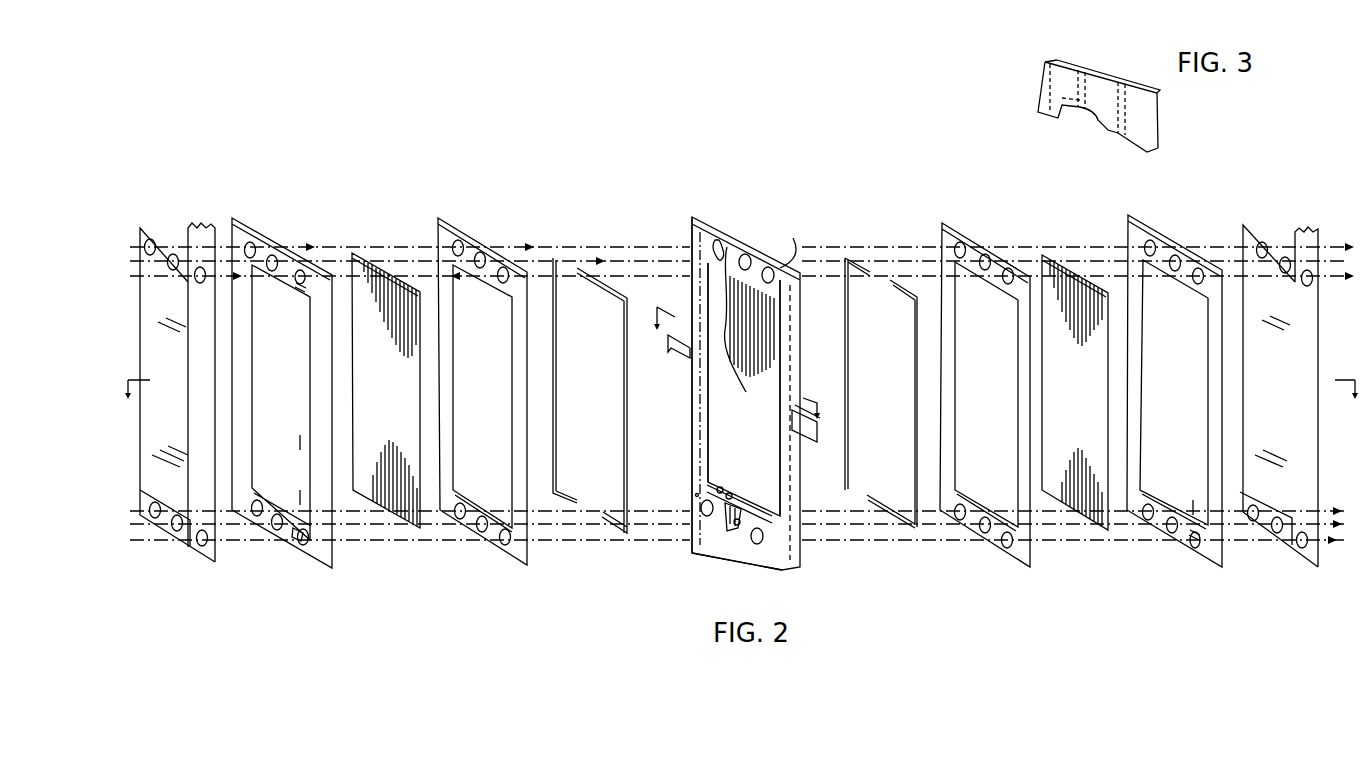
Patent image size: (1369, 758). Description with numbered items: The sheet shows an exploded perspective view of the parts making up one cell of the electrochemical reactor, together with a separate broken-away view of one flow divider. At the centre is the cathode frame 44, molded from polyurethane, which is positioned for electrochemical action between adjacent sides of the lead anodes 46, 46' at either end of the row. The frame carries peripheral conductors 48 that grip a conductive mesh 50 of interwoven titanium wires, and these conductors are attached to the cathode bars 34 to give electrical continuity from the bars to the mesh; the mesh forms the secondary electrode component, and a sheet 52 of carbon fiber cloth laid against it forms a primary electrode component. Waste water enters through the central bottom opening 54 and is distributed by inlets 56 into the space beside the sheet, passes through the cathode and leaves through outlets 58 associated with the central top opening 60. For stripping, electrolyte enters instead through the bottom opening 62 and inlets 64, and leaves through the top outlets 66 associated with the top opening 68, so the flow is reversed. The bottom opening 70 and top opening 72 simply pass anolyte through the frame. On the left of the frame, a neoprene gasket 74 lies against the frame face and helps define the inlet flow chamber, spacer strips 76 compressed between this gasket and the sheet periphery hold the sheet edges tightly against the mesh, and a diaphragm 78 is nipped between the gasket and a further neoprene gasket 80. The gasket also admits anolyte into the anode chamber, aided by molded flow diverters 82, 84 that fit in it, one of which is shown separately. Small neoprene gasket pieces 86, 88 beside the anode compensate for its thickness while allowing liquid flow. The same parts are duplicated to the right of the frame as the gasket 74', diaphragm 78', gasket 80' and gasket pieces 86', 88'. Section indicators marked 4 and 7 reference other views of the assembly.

In FIG. 2, the section line 4- 4 is at (738, 365).
In FIG. 2, the section line 7- 7 is at (740, 402).
In FIG. 2, the cathode bar 34 is at (810, 437).
In FIG. 2, the cathode frame 44 is at (752, 233).
In FIG. 2, the lead anode 46 is at (212, 371).
In FIG. 2, the lead anode 46' is at (1319, 380).
In FIG. 2, the peripheral conductor 48 is at (850, 510).
In FIG. 2, the conductive mesh 50 is at (801, 245).
In FIG. 2, the sheet 52 is at (720, 452).
In FIG. 2, the central bottom opening 54 is at (740, 537).
In FIG. 2, the inlet 56 is at (723, 520).
In FIG. 2, the outlet 58 is at (738, 319).
In FIG. 2, the central top opening 60 is at (746, 250).
In FIG. 2, the bottom opening 62 is at (704, 514).
In FIG. 2, the inlet 64 is at (727, 490).
In FIG. 2, the top outlet 66 is at (687, 250).
In FIG. 2, the top opening 68 is at (725, 245).
In FIG. 2, the bottom opening 70 is at (755, 544).
In FIG. 2, the top opening 72 is at (764, 265).
In FIG. 2, the neoprene gasket 74 is at (482, 409).
In FIG. 2, the neoprene gasket 74' is at (985, 409).
In FIG. 2, the spacer strip 76 is at (884, 493).
In FIG. 2, the diaphragm 78 is at (386, 418).
In FIG. 2, the diaphragm 78' is at (1075, 426).
In FIG. 2, the neoprene gasket 80 is at (282, 409).
In FIG. 2, the neoprene gasket 80' is at (1174, 408).
In FIG. 2, the flow diverter 82 is at (297, 540).
In FIG. 3, the flow diverter 82 is at (1042, 102).
In FIG. 2, the flow diverter 84 is at (300, 290).
In FIG. 2, the neoprene gasket piece 86 is at (177, 537).
In FIG. 2, the neoprene gasket piece 86' is at (1279, 539).
In FIG. 2, the neoprene gasket piece 88 is at (173, 342).
In FIG. 2, the neoprene gasket piece 88' is at (1278, 353).